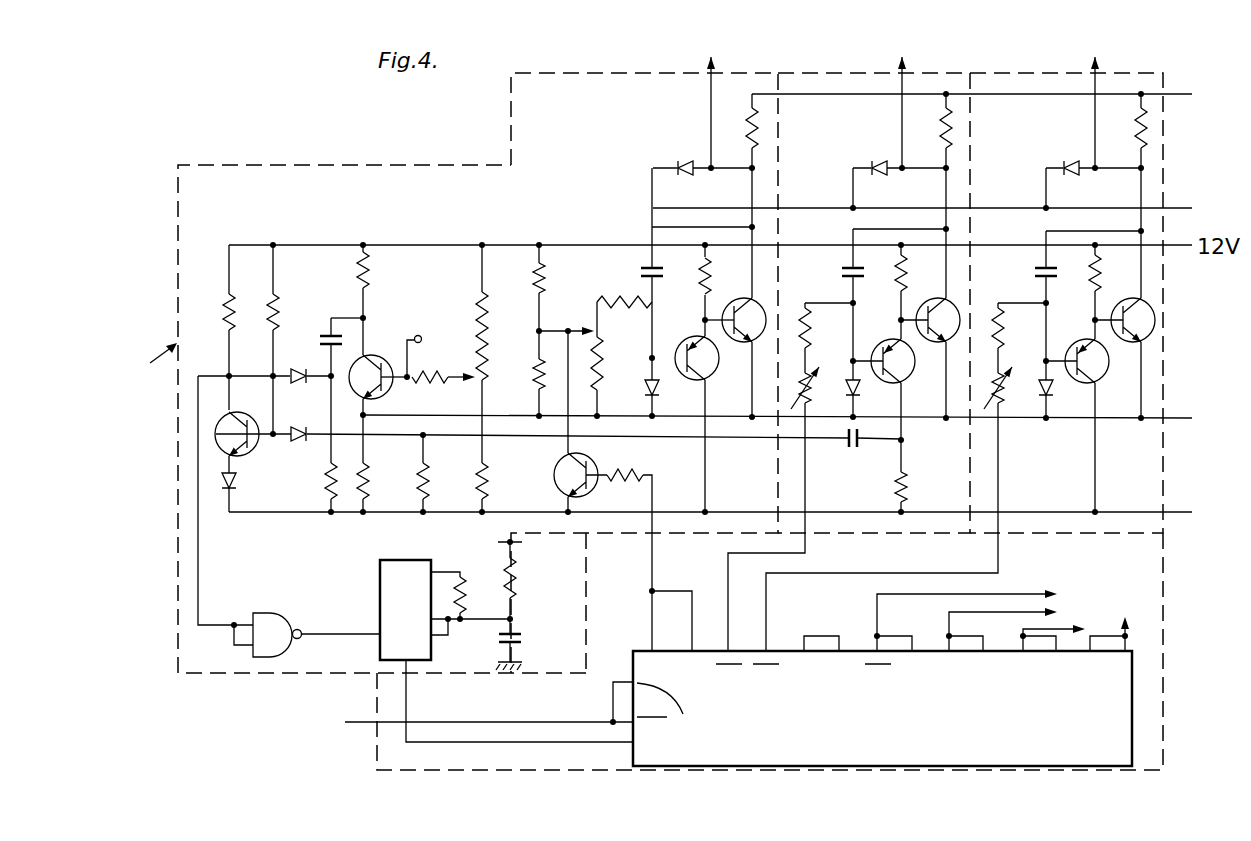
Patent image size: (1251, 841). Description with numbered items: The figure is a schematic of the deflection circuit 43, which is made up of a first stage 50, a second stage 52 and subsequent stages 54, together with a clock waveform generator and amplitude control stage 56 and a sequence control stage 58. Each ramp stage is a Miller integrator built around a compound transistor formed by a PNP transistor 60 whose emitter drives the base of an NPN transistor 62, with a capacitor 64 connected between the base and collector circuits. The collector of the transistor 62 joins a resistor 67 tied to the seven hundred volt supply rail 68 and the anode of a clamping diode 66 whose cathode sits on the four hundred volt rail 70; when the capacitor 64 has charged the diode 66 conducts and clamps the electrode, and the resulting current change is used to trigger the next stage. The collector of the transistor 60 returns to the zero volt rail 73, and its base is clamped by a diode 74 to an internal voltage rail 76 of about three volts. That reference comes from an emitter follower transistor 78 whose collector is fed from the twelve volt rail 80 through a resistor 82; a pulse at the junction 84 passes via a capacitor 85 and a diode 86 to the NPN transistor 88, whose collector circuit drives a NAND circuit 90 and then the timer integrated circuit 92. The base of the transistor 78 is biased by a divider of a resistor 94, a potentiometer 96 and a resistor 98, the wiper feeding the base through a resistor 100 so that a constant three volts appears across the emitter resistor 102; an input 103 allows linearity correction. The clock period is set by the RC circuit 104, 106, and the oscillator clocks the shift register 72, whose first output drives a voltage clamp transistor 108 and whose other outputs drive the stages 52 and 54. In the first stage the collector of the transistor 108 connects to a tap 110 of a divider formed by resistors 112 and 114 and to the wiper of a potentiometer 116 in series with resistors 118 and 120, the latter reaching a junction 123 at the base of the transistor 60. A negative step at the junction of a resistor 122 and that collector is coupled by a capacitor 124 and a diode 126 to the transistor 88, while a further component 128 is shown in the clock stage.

The circuit 43 is at (148, 365).
The first stage 50 is at (511, 121).
The second stage 52 is at (850, 77).
The subsequent stages 54 is at (1043, 77).
The clock waveform generator and amplitude control stage 56 is at (380, 172).
The sequence control stage 58 is at (1150, 582).
The PNP transistor 60 is at (709, 367).
The NPN transistor 62 is at (757, 316).
The capacitor 64 is at (650, 262).
The clamping diode 66 is at (683, 160).
The resistor 67 is at (757, 128).
The 700 V supply rail 68 is at (812, 93).
The 400 V rail 70 is at (1000, 208).
The shift register 72 is at (1117, 733).
The zero volt rail 73 is at (1040, 511).
The diode 74 is at (658, 388).
The internal voltage rail 76 is at (928, 420).
The emitter follower transistor 78 is at (357, 380).
The 12 volt rail 80 is at (545, 244).
The resistor 82 is at (368, 282).
The junction 84 is at (363, 318).
The capacitor 85 is at (328, 335).
The diode 86 is at (288, 372).
The NPN transistor 88 is at (216, 434).
The NAND circuit 90 is at (278, 618).
The integrated circuit 92 is at (380, 577).
The resistor 94 is at (482, 297).
The potentiometer 96 is at (478, 368).
The resistor 98 is at (478, 482).
The resistor 100 is at (437, 380).
The emitter resistor 102 is at (370, 477).
The input 103 is at (418, 335).
The RC circuit resistor 104 is at (515, 578).
The RC circuit capacitor 106 is at (516, 632).
The voltage clamp transistor 108 is at (567, 474).
The tap 110 is at (541, 330).
The resistor 112 is at (537, 392).
The resistor 114 is at (541, 265).
The potentiometer 116 is at (600, 322).
The resistor 118 is at (602, 392).
The resistor 120 is at (628, 296).
The resistor 122 is at (895, 475).
The junction 123 is at (698, 318).
The capacitor 124 is at (845, 448).
The diode 126 is at (297, 440).
The resistor 128 is at (417, 497).